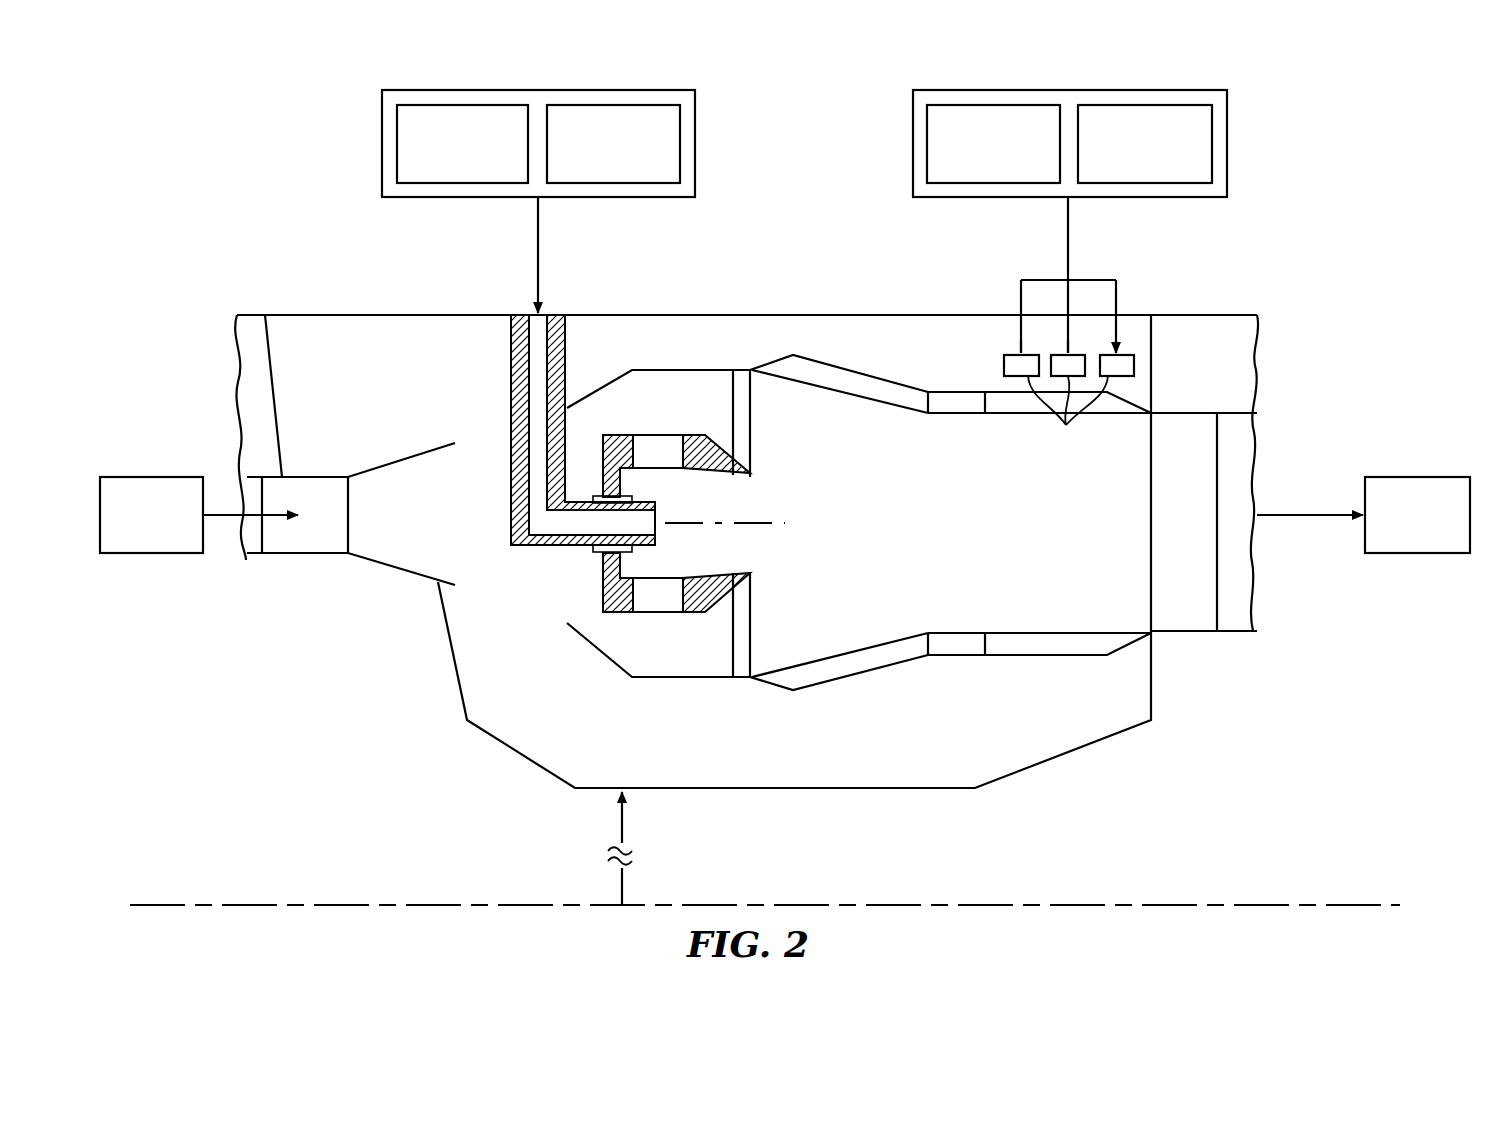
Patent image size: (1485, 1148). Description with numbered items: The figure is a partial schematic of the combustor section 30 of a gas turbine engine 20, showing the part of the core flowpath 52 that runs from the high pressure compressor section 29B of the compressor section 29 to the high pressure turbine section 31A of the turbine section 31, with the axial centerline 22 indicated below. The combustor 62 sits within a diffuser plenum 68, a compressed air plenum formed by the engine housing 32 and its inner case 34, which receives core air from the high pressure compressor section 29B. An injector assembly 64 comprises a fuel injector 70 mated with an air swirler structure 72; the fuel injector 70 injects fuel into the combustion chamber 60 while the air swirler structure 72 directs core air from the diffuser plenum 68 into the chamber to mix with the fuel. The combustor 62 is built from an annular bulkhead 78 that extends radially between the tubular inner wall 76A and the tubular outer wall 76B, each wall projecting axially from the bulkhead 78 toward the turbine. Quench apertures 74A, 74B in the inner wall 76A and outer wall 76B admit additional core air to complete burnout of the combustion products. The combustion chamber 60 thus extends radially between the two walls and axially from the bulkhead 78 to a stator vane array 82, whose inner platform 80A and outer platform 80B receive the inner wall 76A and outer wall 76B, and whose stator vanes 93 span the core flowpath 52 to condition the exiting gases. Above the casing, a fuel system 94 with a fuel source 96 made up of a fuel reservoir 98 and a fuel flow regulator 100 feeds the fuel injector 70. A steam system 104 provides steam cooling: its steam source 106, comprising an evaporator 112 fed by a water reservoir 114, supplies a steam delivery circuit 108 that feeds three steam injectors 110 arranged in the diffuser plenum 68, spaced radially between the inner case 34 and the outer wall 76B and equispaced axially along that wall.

The gas turbine engine 20 is at (220, 128).
The axial centerline 22 is at (135, 903).
The compressor section 29 is at (200, 347).
The high pressure compressor section 29B is at (170, 532).
The combustor section 30 is at (780, 290).
The turbine section 31 is at (1315, 305).
The high pressure turbine section 31A is at (1436, 532).
The engine housing 32 is at (746, 502).
The inner case 34 is at (362, 304).
The core flowpath 52 is at (251, 539).
The combustion chamber 60 is at (1028, 549).
The combustor 62 is at (869, 367).
The injector assembly 64 is at (520, 563).
The diffuser plenum 68 is at (332, 404).
The fuel injector 70 is at (496, 518).
The air swirler structure 72 is at (721, 440).
The quench aperture 74A is at (960, 633).
The quench aperture 74B is at (960, 417).
The inner combustor wall 76A is at (883, 633).
The outer combustor wall 76B is at (903, 419).
The combustor bulkhead wall 78 is at (763, 617).
The inner platform 80A is at (1190, 636).
The outer platform 80B is at (1212, 403).
The stator vane array 82 is at (1233, 436).
The stator vane 93 is at (1220, 588).
The fuel system 94 is at (572, 118).
The fuel source 96 is at (706, 143).
The fuel reservoir 98 is at (449, 173).
The fuel flow regulator 100 is at (593, 173).
The steam system 104 is at (1134, 118).
The steam source 106 is at (1231, 143).
The steam delivery circuit 108 is at (1131, 283).
The steam injector 110 is at (1069, 407).
The evaporator 112 is at (973, 173).
The water reservoir 114 is at (1125, 173).